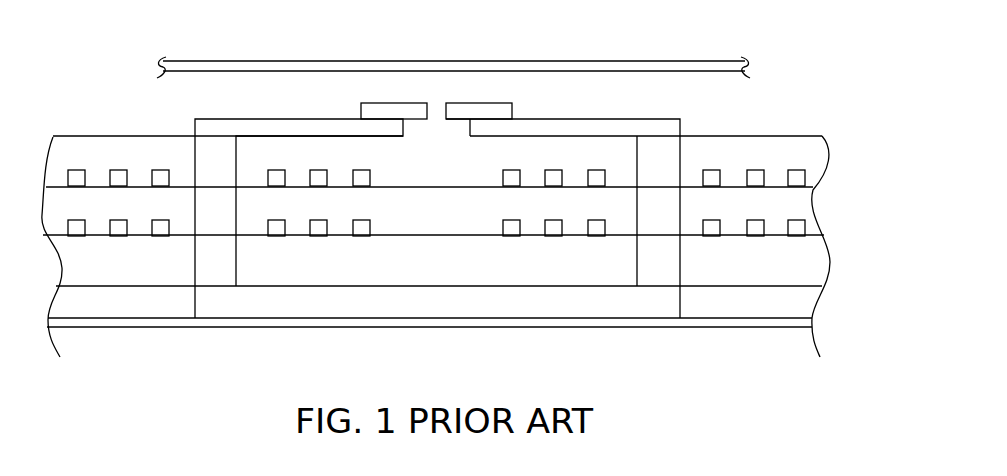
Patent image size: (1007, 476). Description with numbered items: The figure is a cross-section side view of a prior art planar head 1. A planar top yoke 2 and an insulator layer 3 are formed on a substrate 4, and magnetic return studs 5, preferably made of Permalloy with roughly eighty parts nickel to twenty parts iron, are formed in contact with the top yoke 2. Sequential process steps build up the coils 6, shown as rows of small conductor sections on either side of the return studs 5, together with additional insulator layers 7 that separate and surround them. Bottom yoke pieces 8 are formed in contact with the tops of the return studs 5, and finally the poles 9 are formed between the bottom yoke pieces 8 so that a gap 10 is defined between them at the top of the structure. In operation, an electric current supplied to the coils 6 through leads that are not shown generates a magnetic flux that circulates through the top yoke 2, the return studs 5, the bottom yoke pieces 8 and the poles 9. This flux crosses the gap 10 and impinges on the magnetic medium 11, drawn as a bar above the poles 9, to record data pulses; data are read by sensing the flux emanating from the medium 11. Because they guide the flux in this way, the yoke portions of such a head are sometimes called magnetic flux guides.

The planar head 1 is at (764, 122).
The planar top yoke 2 is at (336, 326).
The insulator layer 3 is at (82, 305).
The substrate 4 is at (428, 367).
The magnetic return studs 5 is at (220, 258).
The coils 6 is at (160, 228).
The additional insulator layers 7 is at (82, 152).
The bottom yoke pieces 8 is at (232, 128).
The poles 9 is at (390, 105).
The gap 10 is at (437, 105).
The magnetic medium 11 is at (487, 63).